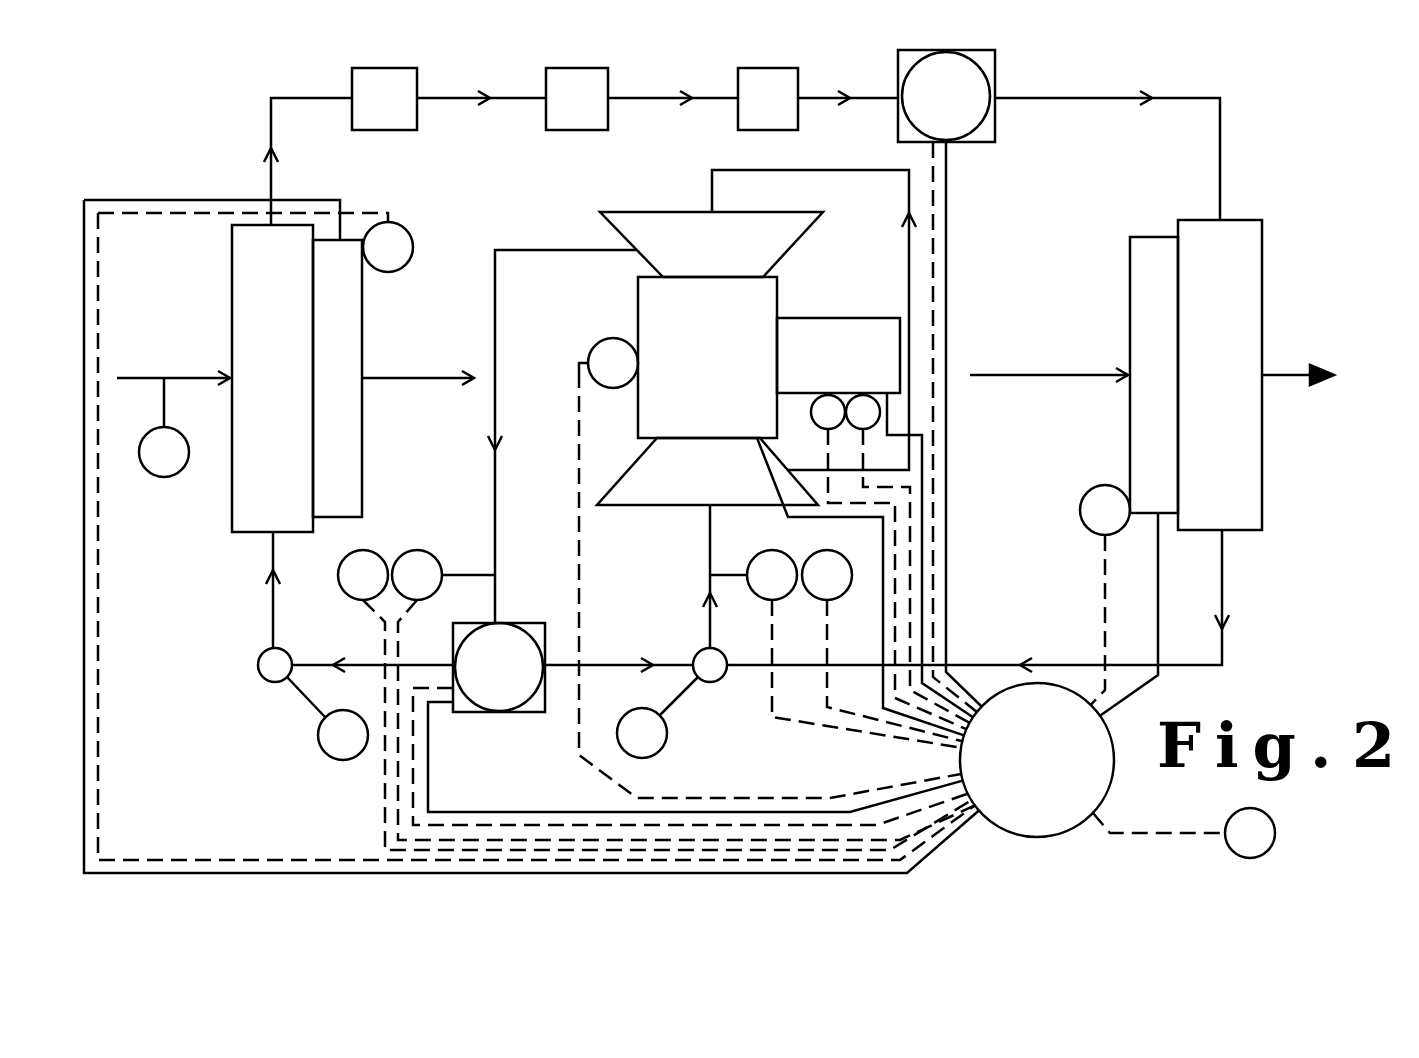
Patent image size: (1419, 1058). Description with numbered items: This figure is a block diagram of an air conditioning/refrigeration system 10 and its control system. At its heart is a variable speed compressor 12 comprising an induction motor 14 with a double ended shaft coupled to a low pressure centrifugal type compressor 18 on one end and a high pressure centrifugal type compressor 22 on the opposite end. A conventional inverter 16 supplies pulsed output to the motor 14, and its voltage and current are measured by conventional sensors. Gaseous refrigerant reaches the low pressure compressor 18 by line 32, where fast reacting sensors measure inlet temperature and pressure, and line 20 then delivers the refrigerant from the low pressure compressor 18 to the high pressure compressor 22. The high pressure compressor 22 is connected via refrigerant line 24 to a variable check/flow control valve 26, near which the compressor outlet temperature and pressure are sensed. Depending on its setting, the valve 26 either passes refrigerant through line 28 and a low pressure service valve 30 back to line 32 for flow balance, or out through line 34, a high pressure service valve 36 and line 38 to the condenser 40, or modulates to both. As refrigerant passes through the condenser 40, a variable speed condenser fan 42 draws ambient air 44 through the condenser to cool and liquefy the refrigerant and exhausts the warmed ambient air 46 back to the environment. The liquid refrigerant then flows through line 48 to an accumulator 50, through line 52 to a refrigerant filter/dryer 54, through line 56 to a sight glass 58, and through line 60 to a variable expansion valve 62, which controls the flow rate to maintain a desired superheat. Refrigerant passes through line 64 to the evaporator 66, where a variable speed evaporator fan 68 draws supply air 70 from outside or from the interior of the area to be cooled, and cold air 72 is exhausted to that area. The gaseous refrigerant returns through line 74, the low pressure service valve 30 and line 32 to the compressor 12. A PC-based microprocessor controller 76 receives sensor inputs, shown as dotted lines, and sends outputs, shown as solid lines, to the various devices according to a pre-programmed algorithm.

The air conditioning/refrigeration system 10 is at (185, 178).
The variable speed compressor 12 is at (560, 368).
The induction motor 14 is at (638, 322).
The inverter 16 is at (855, 325).
The low pressure centrifugal type compressor 18 is at (610, 505).
The line 20 is at (837, 170).
The high pressure centrifugal type compressor 22 is at (663, 212).
The refrigerant line 24 is at (495, 283).
The variable check/flow control valve 26 is at (497, 608).
The line 28 is at (640, 668).
The low pressure service valve 30 is at (655, 757).
The line 32 is at (705, 618).
The line 34 is at (310, 665).
The high pressure service valve 36 is at (335, 760).
The line 38 is at (272, 603).
The condenser 40 is at (232, 477).
The variable speed condenser fan 42 is at (348, 463).
The ambient air 44 is at (185, 380).
The warmed ambient air 46 is at (398, 382).
The line 48 is at (271, 130).
The accumulator 50 is at (372, 132).
The line 52 is at (440, 100).
The refrigerant filter/dryer 54 is at (573, 68).
The line 56 is at (627, 98).
The sight glass 58 is at (740, 82).
The line 60 is at (877, 100).
The variable expansion valve 62 is at (994, 106).
The line 64 is at (1082, 98).
The evaporator 66 is at (1207, 218).
The variable speed evaporator fan 68 is at (1130, 437).
The supply air 70 is at (1055, 378).
The cold air 72 is at (1275, 378).
The line 74 is at (1222, 560).
The PC-based microprocessor controller 76 is at (1108, 795).